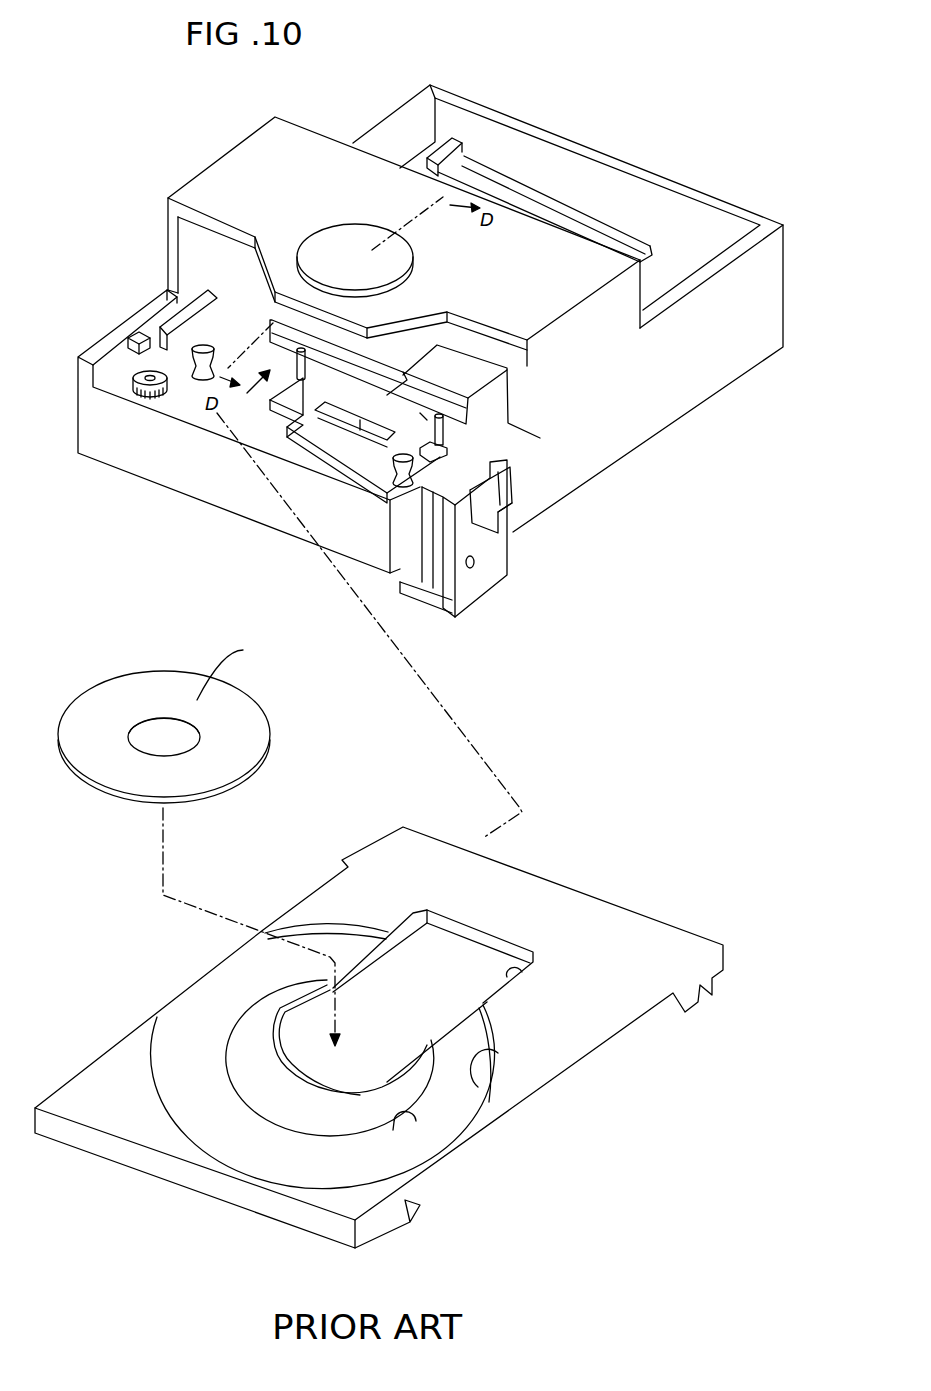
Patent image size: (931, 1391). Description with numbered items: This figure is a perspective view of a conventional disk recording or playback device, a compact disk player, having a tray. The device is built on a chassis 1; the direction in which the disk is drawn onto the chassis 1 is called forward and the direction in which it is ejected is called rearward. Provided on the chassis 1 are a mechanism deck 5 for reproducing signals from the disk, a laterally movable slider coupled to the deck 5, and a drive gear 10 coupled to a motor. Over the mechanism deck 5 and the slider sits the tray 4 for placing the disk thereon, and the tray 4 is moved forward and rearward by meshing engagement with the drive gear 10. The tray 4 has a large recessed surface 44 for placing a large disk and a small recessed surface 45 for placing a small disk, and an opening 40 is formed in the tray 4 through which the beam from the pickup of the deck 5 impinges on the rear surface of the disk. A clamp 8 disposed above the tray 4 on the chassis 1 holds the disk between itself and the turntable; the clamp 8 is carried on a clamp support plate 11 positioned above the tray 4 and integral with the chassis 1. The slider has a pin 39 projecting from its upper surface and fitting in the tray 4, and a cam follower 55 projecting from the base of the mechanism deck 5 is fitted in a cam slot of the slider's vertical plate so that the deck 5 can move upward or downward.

The chassis 1 is at (182, 413).
The tray 4 is at (622, 988).
The mechanism deck 5 is at (473, 373).
The clamp 8 is at (337, 242).
The drive gear 10 is at (140, 393).
The clamp support plate 11 is at (242, 155).
The pin 39 is at (445, 458).
The opening 40 is at (512, 968).
The large recessed surface 44 is at (493, 1093).
The small recessed surface 45 is at (415, 1118).
The cam follower 55 is at (405, 375).